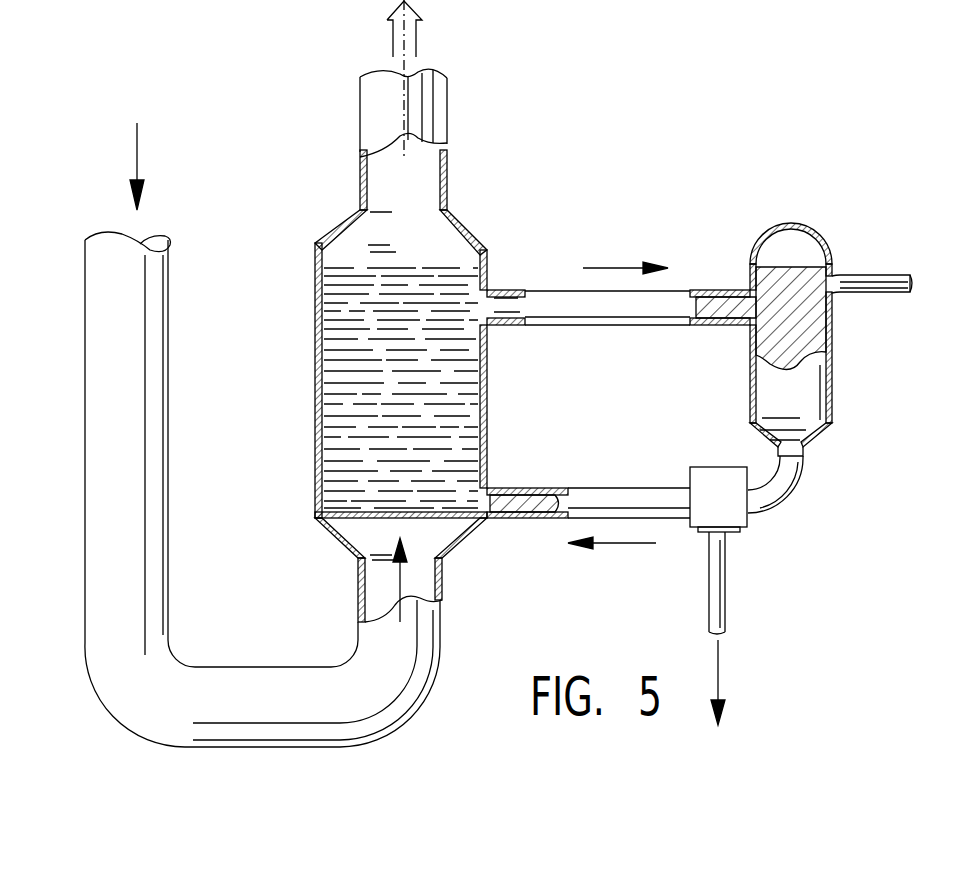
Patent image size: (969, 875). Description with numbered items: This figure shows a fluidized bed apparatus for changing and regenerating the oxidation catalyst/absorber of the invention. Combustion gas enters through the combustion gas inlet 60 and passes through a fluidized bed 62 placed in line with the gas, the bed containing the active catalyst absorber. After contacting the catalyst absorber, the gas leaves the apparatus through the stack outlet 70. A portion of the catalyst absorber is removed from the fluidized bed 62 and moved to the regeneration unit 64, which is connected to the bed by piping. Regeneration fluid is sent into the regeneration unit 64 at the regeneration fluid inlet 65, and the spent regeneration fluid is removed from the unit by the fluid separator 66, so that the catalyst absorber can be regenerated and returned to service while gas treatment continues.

The combustion gas inlet 60 is at (85, 345).
The fluidized bed 62 is at (378, 402).
The regeneration unit 64 is at (793, 407).
The regeneration fluid inlet 65 is at (880, 275).
The fluid separator 66 is at (727, 508).
The stack outlet 70 is at (445, 102).